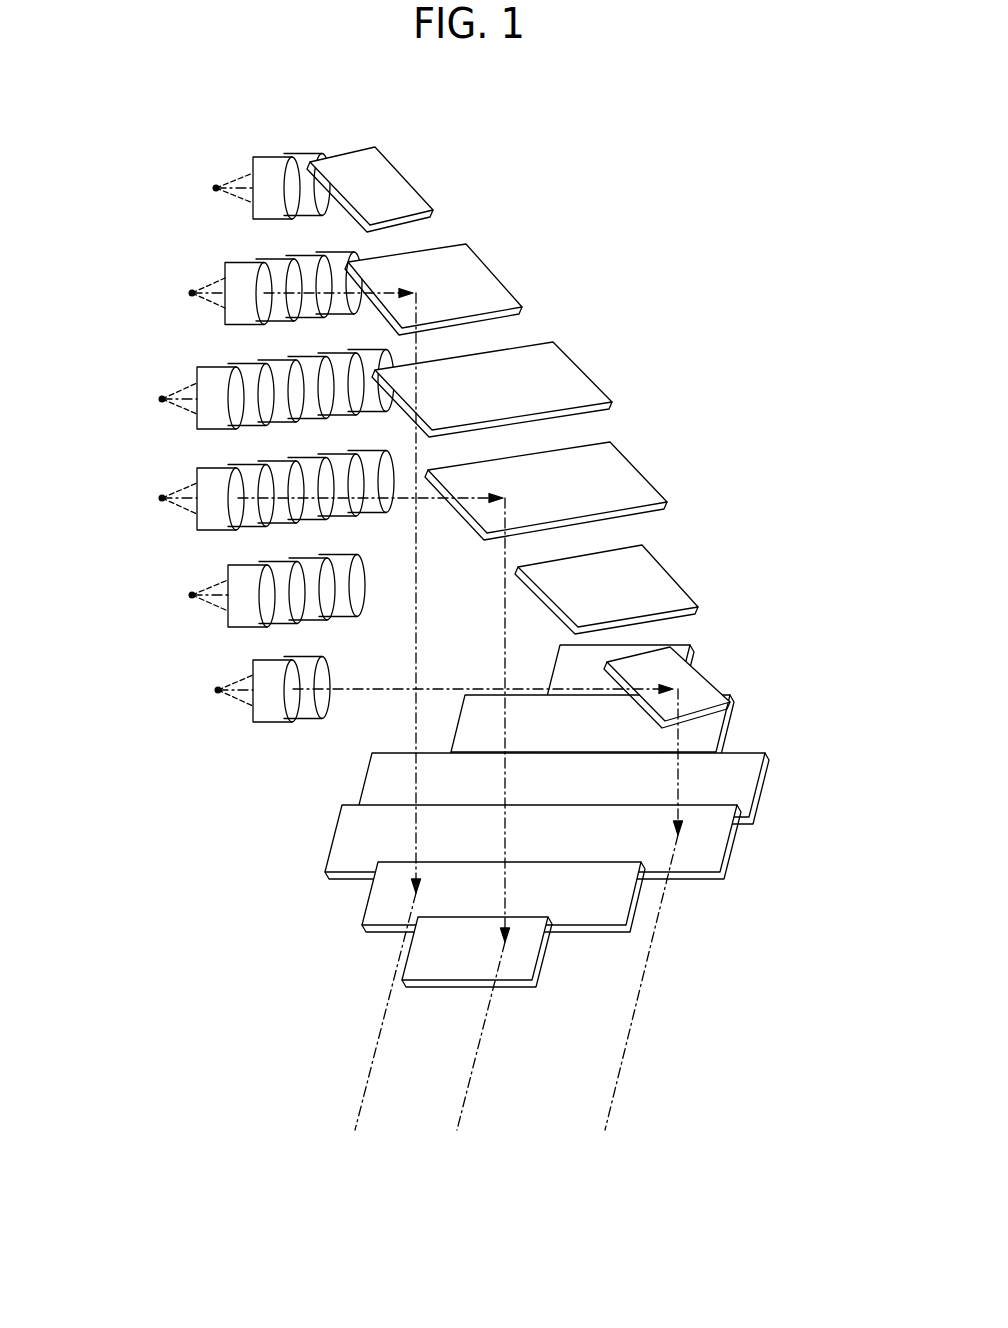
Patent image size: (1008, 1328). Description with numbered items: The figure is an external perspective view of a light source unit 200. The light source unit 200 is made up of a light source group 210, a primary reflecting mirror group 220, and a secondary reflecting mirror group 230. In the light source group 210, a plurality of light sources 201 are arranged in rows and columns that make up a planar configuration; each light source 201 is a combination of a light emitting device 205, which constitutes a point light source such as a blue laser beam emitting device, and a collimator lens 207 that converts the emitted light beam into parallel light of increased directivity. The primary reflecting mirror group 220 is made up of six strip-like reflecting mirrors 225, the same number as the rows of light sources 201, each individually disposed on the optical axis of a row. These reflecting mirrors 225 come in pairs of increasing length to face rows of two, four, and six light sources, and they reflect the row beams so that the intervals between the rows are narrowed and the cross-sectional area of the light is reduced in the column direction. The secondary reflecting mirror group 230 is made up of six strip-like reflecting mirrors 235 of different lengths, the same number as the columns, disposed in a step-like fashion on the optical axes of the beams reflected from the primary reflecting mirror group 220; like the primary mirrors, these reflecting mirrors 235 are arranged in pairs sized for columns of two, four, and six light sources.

The light source unit 200 is at (695, 275).
The light source 201 is at (198, 200).
The light emitting device 205 is at (188, 293).
The collimator lens 207 is at (237, 277).
The light source group 210 is at (165, 545).
The primary reflecting mirror group 220 is at (481, 227).
The reflecting mirror 225 is at (480, 278).
The secondary reflecting mirror group 230 is at (775, 822).
The reflecting mirror 235 is at (688, 845).